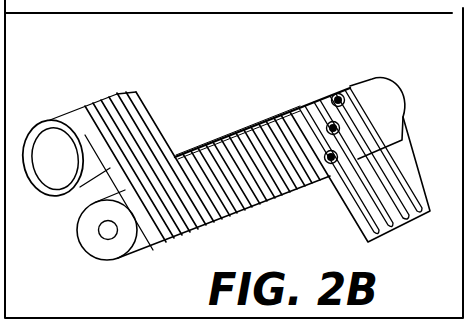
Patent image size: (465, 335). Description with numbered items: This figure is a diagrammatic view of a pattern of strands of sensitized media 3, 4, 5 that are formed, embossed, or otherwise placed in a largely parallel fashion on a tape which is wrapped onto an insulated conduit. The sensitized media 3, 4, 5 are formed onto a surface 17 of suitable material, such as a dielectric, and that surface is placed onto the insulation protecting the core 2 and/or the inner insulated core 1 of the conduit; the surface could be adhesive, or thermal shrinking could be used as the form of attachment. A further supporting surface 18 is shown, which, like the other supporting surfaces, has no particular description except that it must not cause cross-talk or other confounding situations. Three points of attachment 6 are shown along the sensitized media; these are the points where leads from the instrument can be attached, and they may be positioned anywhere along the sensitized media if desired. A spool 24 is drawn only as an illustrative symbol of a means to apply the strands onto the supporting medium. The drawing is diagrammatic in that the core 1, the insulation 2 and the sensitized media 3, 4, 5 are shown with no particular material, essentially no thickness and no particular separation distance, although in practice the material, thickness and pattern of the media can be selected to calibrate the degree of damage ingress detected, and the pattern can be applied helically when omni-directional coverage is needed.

The inner insulated core 1 is at (100, 229).
The insulation protecting the core 2 is at (86, 252).
The sensitized media 3 is at (185, 151).
The sensitized media 4 is at (201, 145).
The sensitized media 5 is at (222, 136).
The points of attachment 6 is at (338, 92).
The surface 17 is at (377, 95).
The supporting surface 18 is at (418, 178).
The spool 24 is at (42, 118).